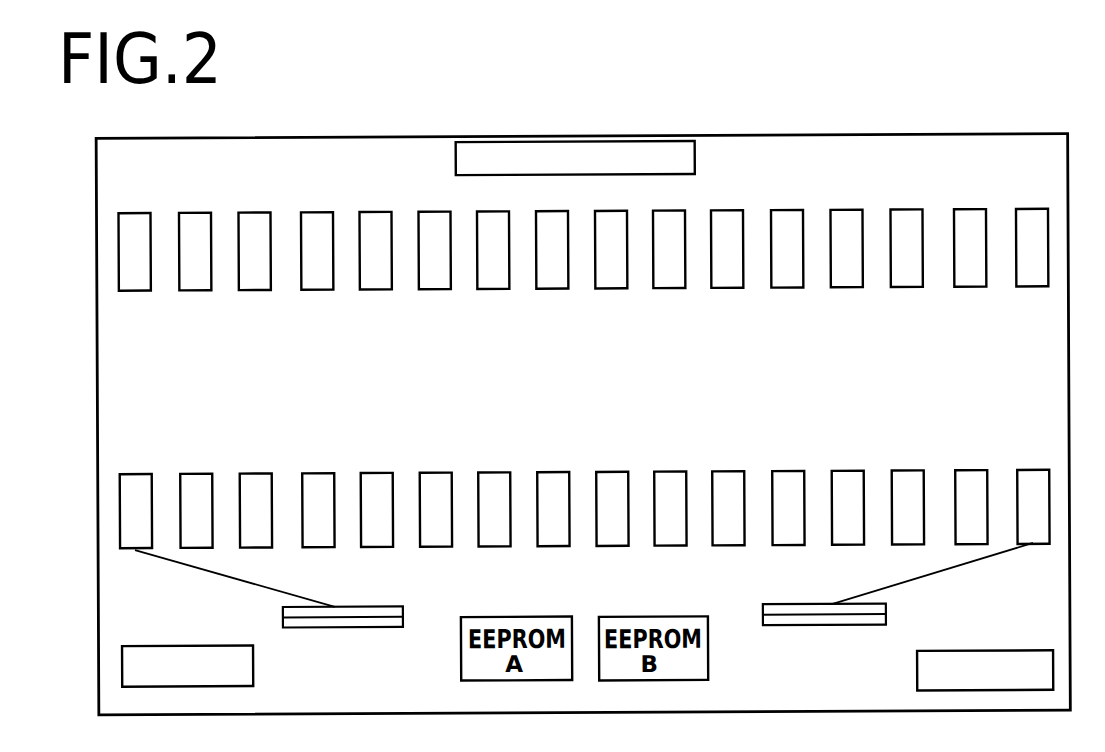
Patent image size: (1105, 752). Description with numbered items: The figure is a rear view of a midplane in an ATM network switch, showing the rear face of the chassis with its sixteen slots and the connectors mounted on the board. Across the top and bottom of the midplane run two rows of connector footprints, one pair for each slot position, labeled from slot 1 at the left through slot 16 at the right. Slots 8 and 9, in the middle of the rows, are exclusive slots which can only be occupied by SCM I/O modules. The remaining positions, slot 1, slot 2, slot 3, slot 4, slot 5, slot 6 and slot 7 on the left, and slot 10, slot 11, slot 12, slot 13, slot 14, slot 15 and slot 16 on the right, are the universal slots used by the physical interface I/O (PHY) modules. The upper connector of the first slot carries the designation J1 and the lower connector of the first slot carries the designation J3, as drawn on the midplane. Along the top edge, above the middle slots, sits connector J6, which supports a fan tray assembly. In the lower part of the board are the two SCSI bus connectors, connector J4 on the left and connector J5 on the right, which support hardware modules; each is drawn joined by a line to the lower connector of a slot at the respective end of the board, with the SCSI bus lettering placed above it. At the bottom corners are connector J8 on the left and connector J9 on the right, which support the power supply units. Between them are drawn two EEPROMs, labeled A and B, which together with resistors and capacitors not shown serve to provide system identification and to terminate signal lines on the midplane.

The slot 1 is at (144, 371).
The slot 2 is at (196, 365).
The slot 3 is at (255, 364).
The slot 4 is at (318, 364).
The slot 5 is at (376, 364).
The slot 6 is at (435, 364).
The slot 7 is at (494, 363).
The slot 8 is at (553, 363).
The slot 9 is at (612, 363).
The slot 10 is at (670, 363).
The slot 11 is at (728, 362).
The slot 12 is at (788, 362).
The slot 13 is at (847, 362).
The slot 14 is at (907, 361).
The slot 15 is at (971, 361).
The slot 16 is at (1033, 348).
The connector J1 (slot 1 upper connector) J1 is at (134, 267).
The connector J3 (slot 1 lower connector) J3 is at (136, 531).
The connector J4 is at (286, 591).
The connector J5 is at (883, 587).
The connector J6 is at (575, 158).
The connector J8 is at (187, 666).
The connector J9 is at (985, 670).